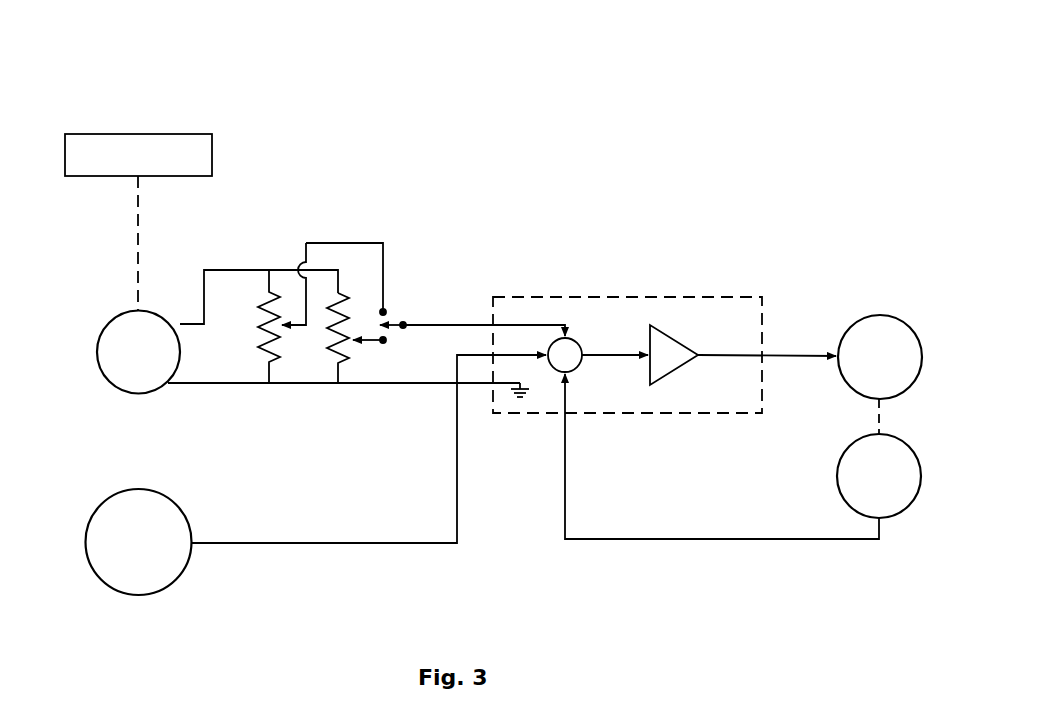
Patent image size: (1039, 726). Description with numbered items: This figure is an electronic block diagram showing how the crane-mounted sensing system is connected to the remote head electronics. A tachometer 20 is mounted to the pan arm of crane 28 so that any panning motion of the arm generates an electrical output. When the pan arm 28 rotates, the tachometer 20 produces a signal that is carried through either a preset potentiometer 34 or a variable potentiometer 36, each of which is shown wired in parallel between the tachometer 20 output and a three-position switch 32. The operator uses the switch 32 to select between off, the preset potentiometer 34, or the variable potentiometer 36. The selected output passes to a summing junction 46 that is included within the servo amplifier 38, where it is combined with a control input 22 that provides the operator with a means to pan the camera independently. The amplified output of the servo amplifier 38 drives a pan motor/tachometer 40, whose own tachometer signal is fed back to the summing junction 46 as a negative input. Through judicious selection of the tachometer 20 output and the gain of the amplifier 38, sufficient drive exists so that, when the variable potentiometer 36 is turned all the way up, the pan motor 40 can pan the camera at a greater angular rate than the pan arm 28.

The tachometer 20 is at (138, 393).
The control input 22 is at (138, 582).
The pan arm of crane 28 is at (212, 150).
The three-position switch 32 is at (392, 312).
The preset potentiometer 34 is at (280, 353).
The variable potentiometer 36 is at (349, 353).
The servo amplifier 38 is at (650, 358).
The pan motor/tachometer 40 is at (892, 315).
The summing junction 46 is at (582, 362).